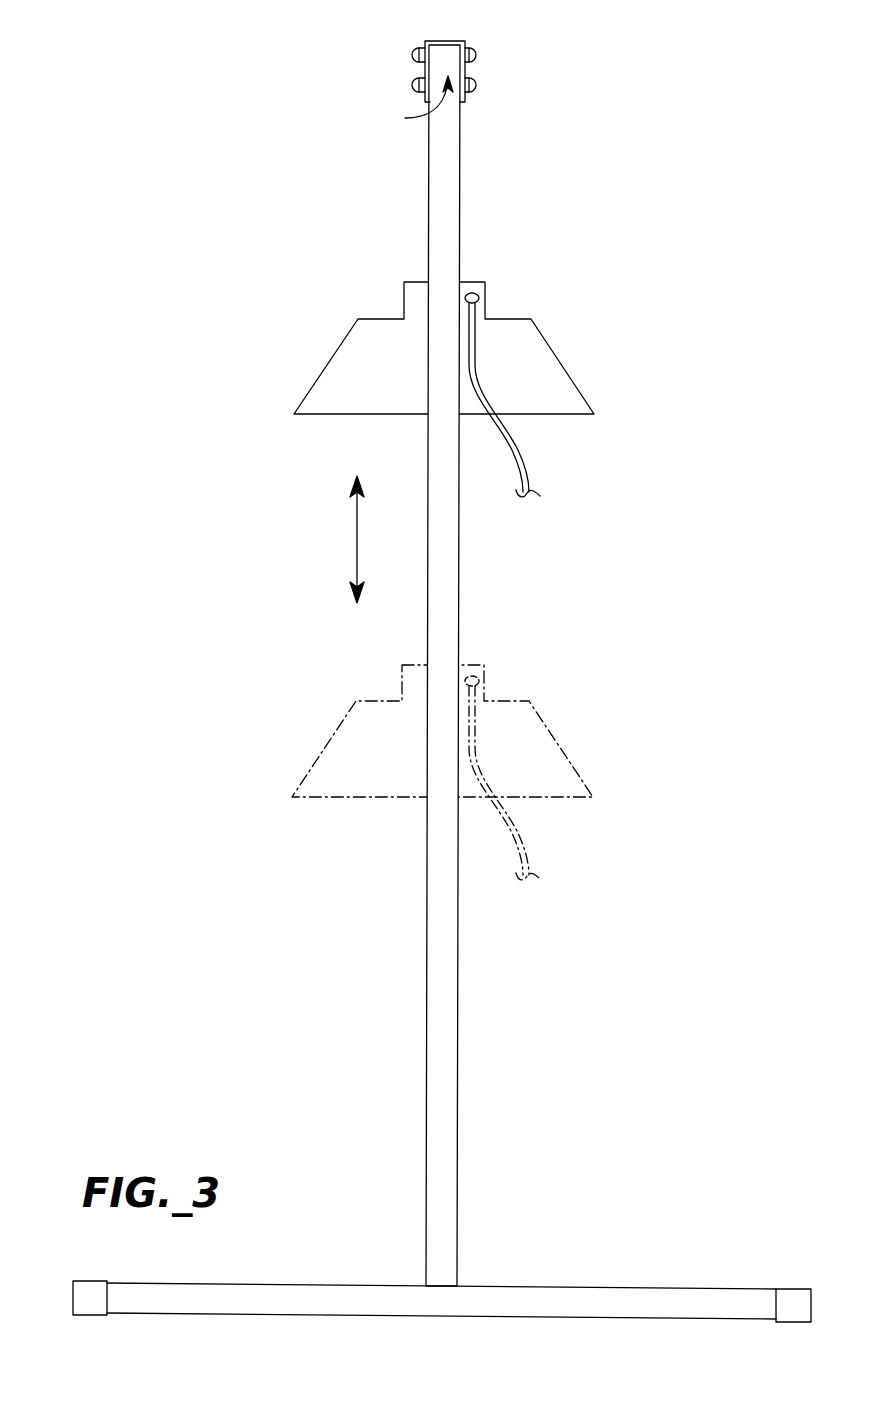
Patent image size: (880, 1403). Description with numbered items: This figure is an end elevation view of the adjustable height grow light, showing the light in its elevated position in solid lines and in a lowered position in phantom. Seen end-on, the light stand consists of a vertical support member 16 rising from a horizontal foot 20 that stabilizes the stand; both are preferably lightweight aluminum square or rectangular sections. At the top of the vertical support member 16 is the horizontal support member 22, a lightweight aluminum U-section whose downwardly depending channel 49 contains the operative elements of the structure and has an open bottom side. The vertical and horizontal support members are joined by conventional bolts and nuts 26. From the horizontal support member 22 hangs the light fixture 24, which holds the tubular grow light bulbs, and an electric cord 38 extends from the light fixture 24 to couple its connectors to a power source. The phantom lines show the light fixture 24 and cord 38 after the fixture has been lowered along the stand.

The second vertical support member 16 is at (447, 192).
The horizontal foot 20 is at (693, 1289).
The horizontal support member 22 is at (441, 41).
The light fixture 24 is at (483, 296).
The bolts and nuts 26 is at (473, 58).
The electric cord 38 is at (527, 459).
The channel 49 is at (416, 103).